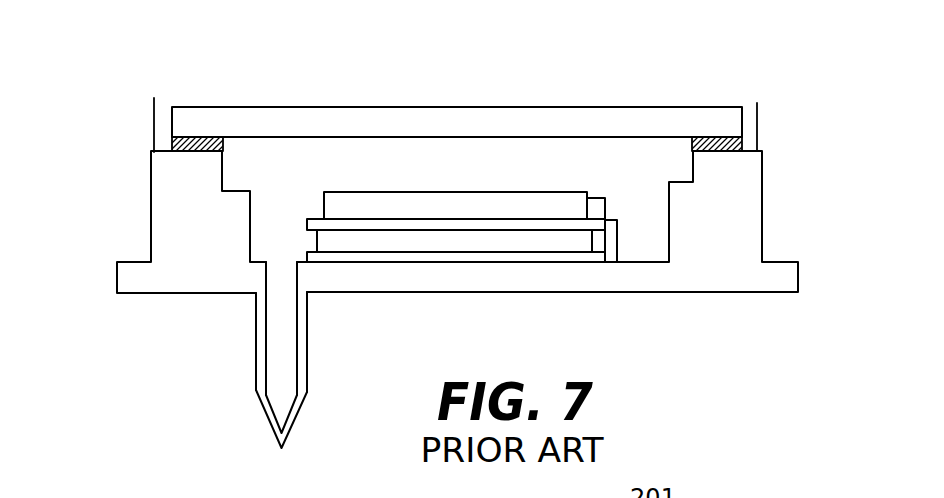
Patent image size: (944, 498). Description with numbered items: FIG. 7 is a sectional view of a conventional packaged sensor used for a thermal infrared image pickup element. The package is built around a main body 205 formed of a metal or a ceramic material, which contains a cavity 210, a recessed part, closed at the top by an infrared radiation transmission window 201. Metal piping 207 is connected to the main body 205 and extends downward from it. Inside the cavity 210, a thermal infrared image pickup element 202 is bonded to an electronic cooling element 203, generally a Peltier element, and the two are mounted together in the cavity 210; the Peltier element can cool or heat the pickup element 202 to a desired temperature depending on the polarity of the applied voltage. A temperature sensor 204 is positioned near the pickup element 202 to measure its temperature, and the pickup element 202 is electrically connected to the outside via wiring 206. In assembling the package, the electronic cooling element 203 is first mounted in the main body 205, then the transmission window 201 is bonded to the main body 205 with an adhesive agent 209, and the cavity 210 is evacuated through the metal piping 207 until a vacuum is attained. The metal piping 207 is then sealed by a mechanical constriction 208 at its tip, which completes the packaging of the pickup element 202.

The infrared radiation transmission window 201 is at (613, 106).
The thermal infrared image pickup element 202 is at (367, 192).
The electronic cooling element 203 is at (618, 242).
The temperature sensor 204 is at (605, 207).
The main body 205 is at (742, 240).
The wiring 206 is at (153, 124).
The metal piping 207 is at (256, 352).
The mechanical constriction 208 is at (268, 420).
The adhesive agent 209 is at (720, 151).
The cavity 210 is at (512, 175).